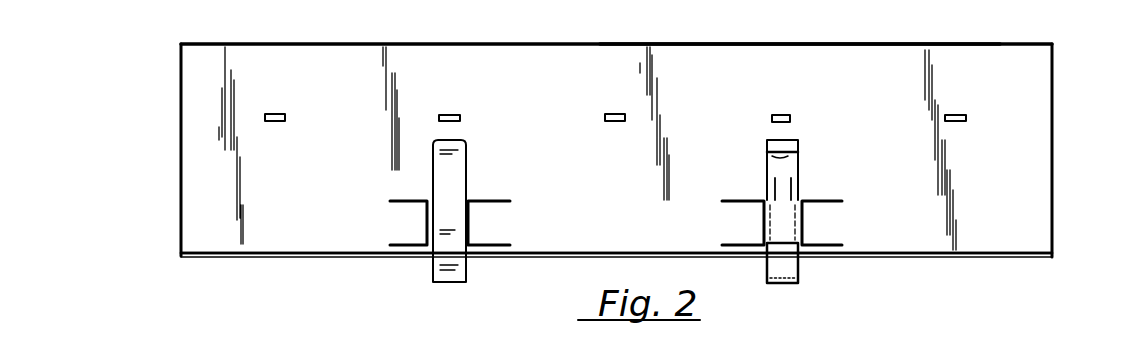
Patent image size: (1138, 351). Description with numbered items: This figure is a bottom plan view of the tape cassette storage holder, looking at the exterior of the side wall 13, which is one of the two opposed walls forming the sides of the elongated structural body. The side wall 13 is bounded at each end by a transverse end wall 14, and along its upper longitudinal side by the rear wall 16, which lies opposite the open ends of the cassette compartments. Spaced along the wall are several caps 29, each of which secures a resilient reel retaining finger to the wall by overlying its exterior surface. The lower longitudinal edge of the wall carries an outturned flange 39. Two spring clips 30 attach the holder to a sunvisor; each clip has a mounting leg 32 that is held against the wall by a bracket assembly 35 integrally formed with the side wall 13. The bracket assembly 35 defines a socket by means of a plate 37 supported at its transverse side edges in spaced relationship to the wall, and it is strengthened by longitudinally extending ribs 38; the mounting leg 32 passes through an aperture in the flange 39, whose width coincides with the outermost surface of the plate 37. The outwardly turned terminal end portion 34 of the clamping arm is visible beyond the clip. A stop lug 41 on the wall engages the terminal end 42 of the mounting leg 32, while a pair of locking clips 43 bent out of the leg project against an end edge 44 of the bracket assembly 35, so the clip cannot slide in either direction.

The side wall 13 is at (1030, 132).
The end wall 14 is at (181, 168).
The rear wall 16 is at (793, 43).
The cap 29 is at (951, 118).
The spring clip 30 is at (788, 297).
The mounting leg 32 is at (788, 272).
The terminal end portion 34 is at (457, 149).
The bracket assembly 35 is at (470, 226).
The plate 37 is at (800, 228).
The rib 38 is at (410, 238).
The outturned flange 39 is at (650, 252).
The stop lug 41 is at (782, 148).
The terminal end 42 is at (790, 156).
The locking clip 43 is at (775, 188).
The end edge 44 is at (763, 200).